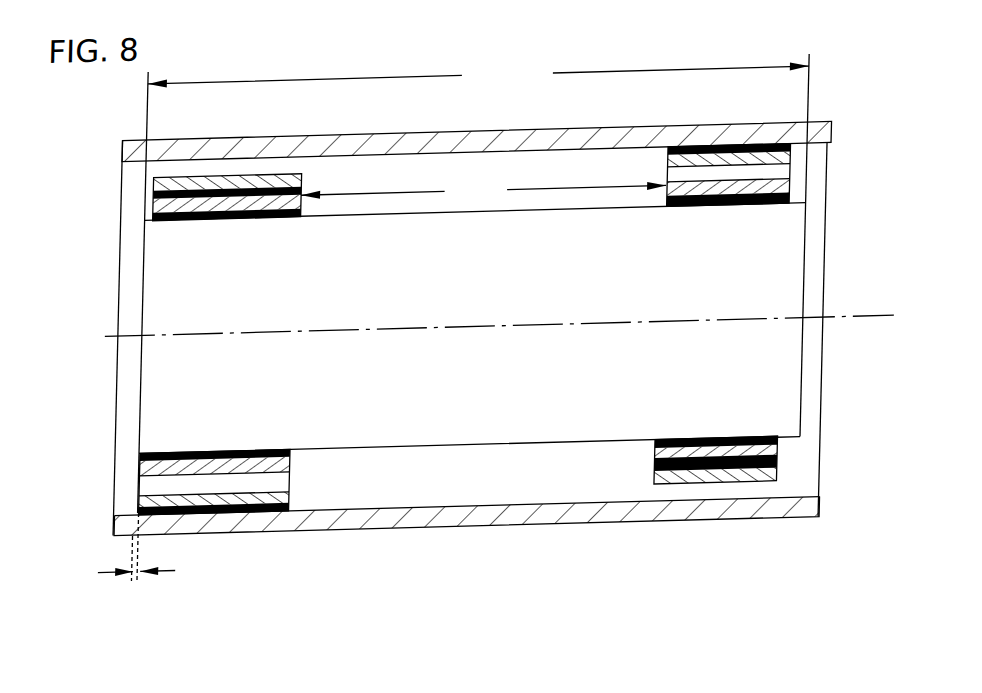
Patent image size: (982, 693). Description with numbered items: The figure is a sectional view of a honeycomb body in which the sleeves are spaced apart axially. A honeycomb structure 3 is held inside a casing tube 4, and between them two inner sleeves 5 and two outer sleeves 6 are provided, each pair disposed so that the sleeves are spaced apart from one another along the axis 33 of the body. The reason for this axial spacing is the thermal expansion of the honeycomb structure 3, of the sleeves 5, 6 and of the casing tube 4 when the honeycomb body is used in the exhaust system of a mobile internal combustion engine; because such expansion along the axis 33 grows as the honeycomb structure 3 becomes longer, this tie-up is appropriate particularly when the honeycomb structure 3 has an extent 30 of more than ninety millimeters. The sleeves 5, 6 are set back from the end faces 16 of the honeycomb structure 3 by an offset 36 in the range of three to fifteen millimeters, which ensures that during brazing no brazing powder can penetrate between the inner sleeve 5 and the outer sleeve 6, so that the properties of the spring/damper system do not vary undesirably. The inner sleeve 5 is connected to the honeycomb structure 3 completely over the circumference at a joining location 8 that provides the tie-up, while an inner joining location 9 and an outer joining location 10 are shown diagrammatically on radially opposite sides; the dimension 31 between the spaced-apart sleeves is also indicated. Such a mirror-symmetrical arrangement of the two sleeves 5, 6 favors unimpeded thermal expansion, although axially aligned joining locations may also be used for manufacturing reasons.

The honeycomb structure 3 is at (789, 261).
The casing tube 4 is at (528, 534).
The inner sleeve 5 is at (781, 474).
The outer sleeve 6 is at (715, 502).
The joining location 8 is at (775, 456).
The inner joining location 9 is at (788, 483).
The outer joining location 10 is at (277, 521).
The end face 16 is at (148, 276).
The extent 30 is at (479, 75).
The distance between bearings 31 is at (484, 187).
The axis 33 is at (884, 342).
The offset 36 is at (148, 584).